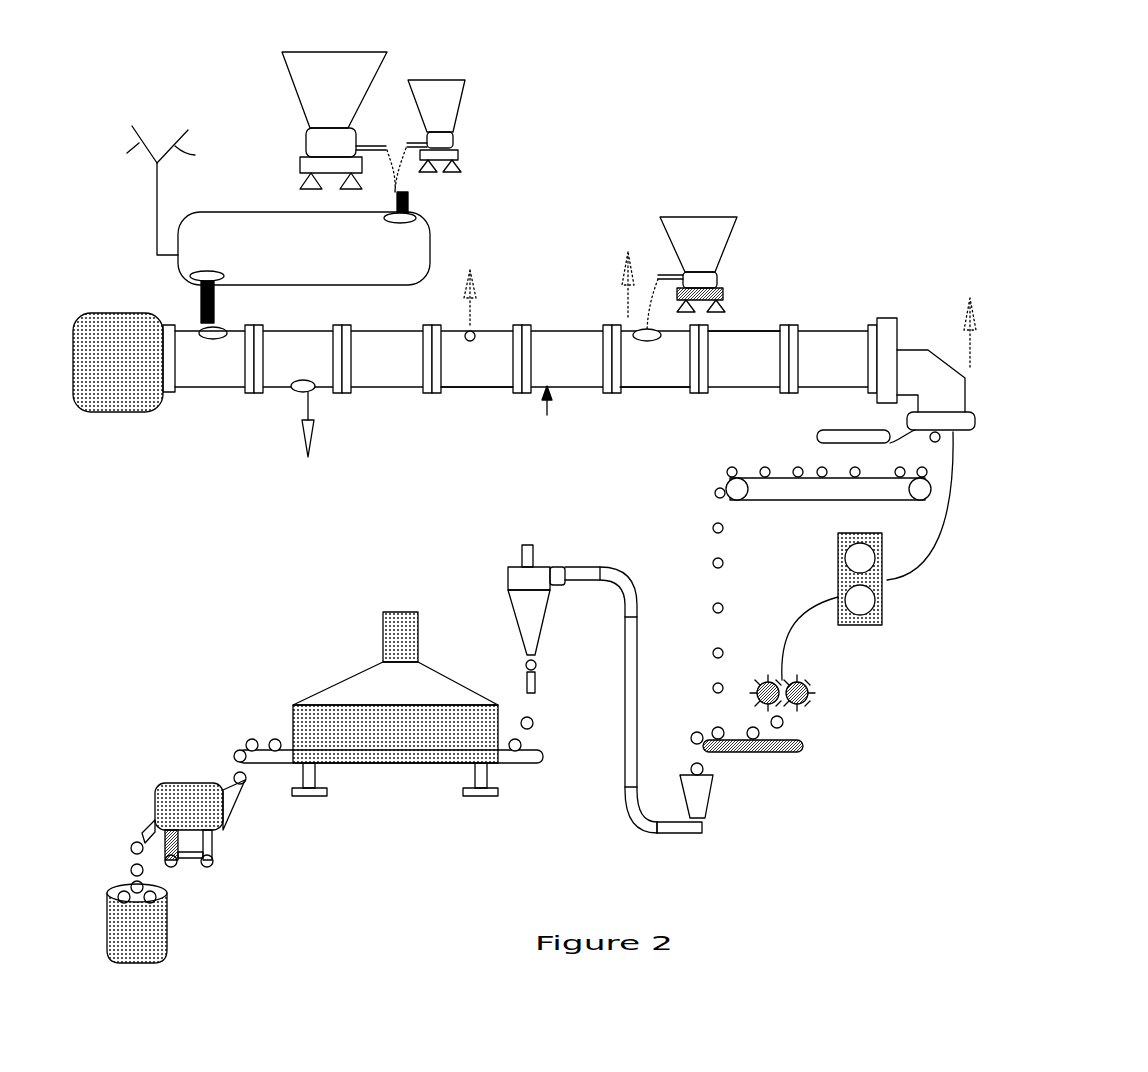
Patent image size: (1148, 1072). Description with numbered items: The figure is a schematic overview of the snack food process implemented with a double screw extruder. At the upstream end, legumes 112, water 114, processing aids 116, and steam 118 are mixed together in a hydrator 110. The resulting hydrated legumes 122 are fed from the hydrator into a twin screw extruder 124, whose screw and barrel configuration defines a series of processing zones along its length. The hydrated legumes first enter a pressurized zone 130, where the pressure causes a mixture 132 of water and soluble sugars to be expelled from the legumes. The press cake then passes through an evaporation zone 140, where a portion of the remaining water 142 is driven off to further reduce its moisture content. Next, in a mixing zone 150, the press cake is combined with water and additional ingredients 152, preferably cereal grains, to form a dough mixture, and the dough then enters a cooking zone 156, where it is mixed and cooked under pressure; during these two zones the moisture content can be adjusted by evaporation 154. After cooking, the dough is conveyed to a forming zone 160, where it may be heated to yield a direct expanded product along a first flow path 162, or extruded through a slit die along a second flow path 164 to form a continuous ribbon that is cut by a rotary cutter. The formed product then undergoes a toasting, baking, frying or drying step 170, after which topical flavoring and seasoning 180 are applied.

The hydrator 110 is at (430, 248).
The legumes 112 is at (326, 50).
The water 114 is at (126, 190).
The processing aids 116 is at (445, 79).
The steam 118 is at (188, 150).
The hydrated legumes 122 is at (200, 301).
The twin screw extruder 124 is at (548, 415).
The pressurized zone 130 is at (315, 332).
The mixture of water and soluble sugars 132 is at (312, 412).
The evaporation zone 140 is at (465, 388).
The water 142 is at (475, 296).
The mixing zone 150 is at (660, 390).
The additional ingredients 152 is at (710, 215).
The evaporation 154 is at (625, 277).
The cooking zone 156 is at (752, 330).
The forming zone 160 is at (947, 523).
The first flow path 162 is at (700, 509).
The second flow path 164 is at (852, 625).
The toasting, baking, frying or drying step 170 is at (393, 765).
The topical flavoring and seasoning 180 is at (182, 783).